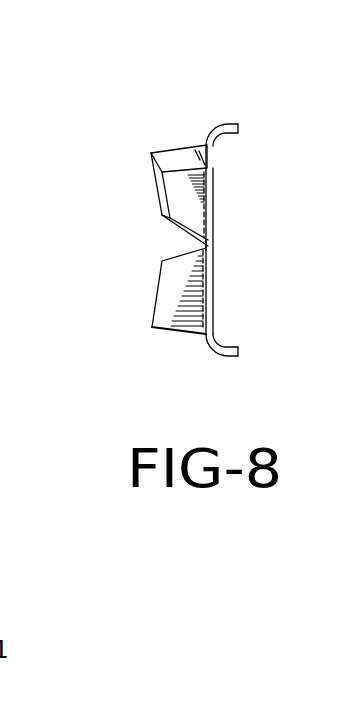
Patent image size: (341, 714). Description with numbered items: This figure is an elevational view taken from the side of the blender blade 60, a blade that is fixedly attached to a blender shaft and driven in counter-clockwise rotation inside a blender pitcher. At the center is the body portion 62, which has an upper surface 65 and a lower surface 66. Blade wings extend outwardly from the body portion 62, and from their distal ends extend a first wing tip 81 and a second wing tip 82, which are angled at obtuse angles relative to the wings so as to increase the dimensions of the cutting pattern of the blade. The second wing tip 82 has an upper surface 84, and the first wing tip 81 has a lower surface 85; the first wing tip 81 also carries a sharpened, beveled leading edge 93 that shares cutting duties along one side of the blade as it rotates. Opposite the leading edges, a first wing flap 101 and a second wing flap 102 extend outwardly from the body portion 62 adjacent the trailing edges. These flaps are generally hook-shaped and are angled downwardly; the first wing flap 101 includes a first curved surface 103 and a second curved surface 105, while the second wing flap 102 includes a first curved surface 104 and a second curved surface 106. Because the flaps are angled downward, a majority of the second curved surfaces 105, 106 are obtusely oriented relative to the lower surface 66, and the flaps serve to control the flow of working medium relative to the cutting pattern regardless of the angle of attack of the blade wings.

The blender blade 60 is at (92, 127).
The body portion 62 is at (223, 257).
The upper surface 65 is at (195, 272).
The lower surface 66 is at (214, 240).
The first wing tip 81 is at (153, 182).
The second wing tip 82 is at (148, 331).
The upper surface 84 is at (158, 300).
The lower surface 85 is at (176, 207).
The leading edge 93 is at (172, 150).
The first wing flap 101 is at (237, 364).
The second wing flap 102 is at (235, 119).
The first curved surface 103 is at (208, 352).
The first curved surface 104 is at (207, 134).
The second curved surface 105 is at (229, 345).
The second curved surface 106 is at (229, 137).